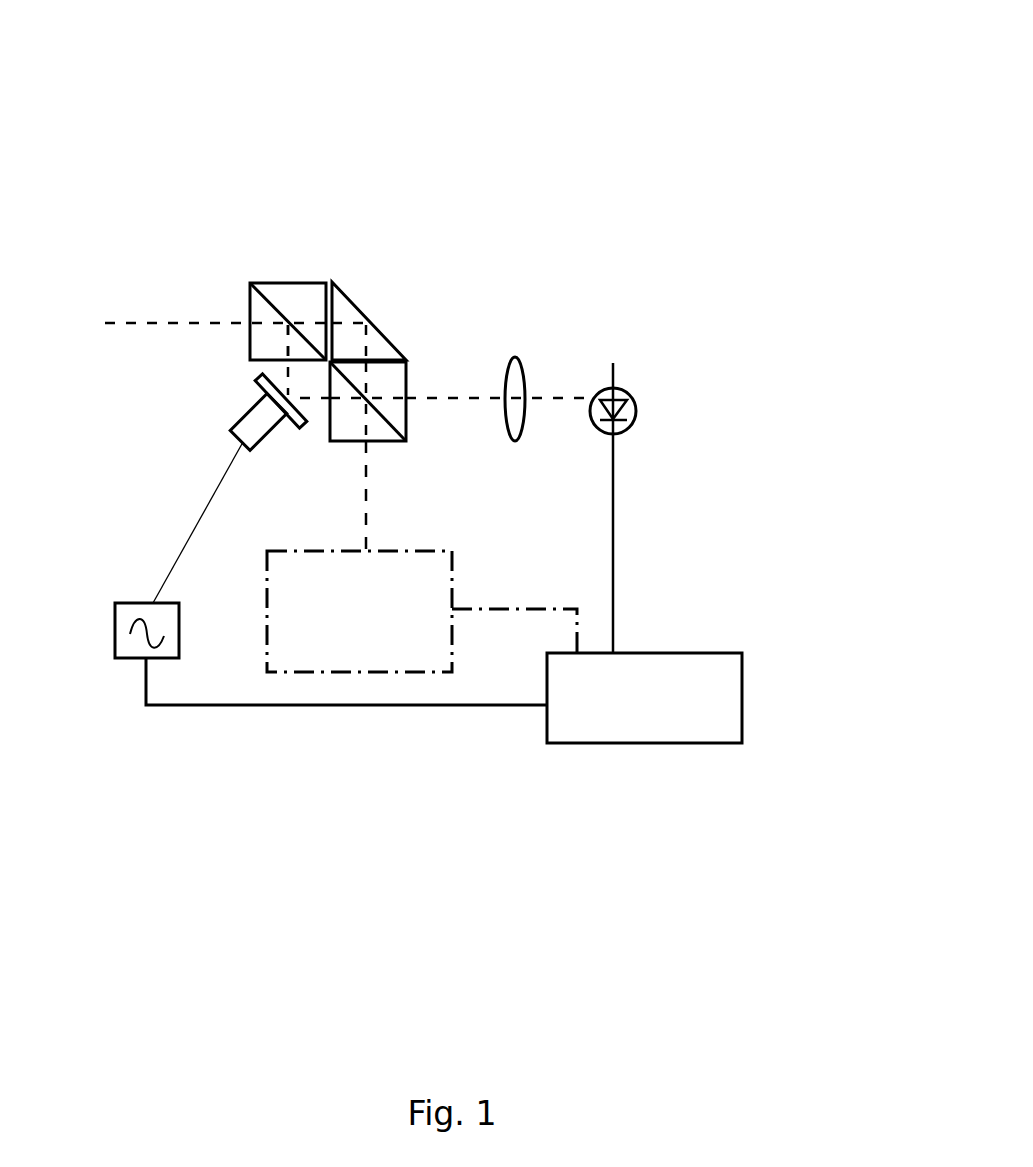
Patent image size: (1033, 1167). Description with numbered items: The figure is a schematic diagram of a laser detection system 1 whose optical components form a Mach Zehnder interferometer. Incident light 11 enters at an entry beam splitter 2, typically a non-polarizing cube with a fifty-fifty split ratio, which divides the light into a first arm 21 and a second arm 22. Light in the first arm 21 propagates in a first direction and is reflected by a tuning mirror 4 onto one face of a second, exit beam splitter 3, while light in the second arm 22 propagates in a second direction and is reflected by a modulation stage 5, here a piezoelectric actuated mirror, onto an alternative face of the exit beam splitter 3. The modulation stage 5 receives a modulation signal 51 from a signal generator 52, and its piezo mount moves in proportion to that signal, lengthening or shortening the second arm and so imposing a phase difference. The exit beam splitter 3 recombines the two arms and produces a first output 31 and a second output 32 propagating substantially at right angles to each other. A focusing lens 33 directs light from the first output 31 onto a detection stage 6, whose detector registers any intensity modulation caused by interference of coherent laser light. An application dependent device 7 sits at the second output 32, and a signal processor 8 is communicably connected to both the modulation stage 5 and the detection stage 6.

The laser detection system 1 is at (644, 101).
The incident light 11 is at (177, 304).
The entry beam splitter 2 is at (306, 256).
The first arm 21 is at (304, 322).
The second arm 22 is at (315, 403).
The tuning mirror 4 is at (353, 298).
The second beam splitter 3 is at (410, 375).
The first output 31 is at (428, 387).
The second output 32 is at (377, 470).
The lens 33 is at (513, 388).
The detection stage 6 is at (643, 413).
The modulation stage 5 is at (265, 393).
The modulation signal 51 is at (198, 522).
The signal generator 52 is at (150, 603).
The application dependent device 7 is at (422, 611).
The signal processor 8 is at (444, 698).